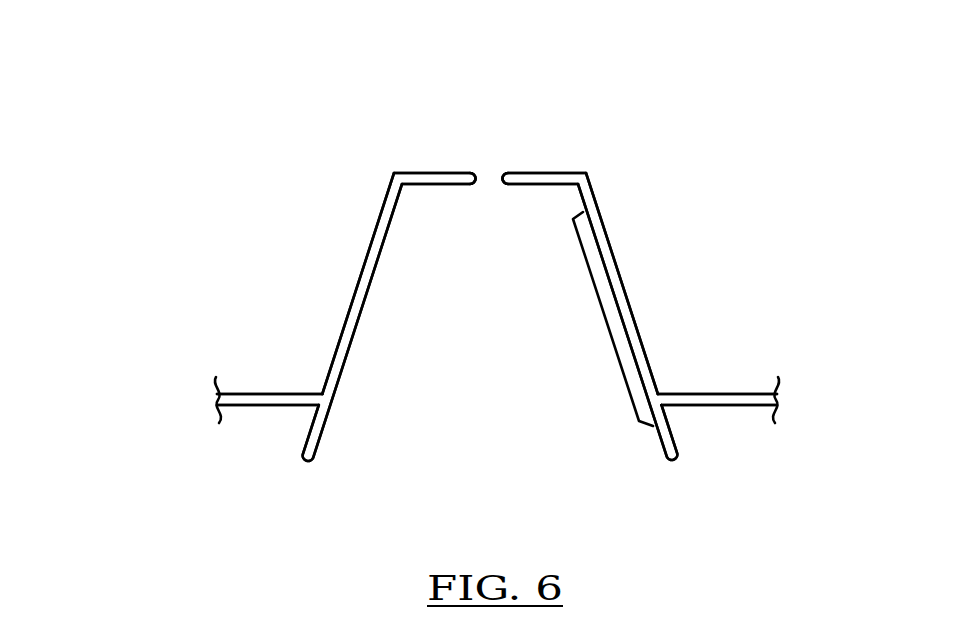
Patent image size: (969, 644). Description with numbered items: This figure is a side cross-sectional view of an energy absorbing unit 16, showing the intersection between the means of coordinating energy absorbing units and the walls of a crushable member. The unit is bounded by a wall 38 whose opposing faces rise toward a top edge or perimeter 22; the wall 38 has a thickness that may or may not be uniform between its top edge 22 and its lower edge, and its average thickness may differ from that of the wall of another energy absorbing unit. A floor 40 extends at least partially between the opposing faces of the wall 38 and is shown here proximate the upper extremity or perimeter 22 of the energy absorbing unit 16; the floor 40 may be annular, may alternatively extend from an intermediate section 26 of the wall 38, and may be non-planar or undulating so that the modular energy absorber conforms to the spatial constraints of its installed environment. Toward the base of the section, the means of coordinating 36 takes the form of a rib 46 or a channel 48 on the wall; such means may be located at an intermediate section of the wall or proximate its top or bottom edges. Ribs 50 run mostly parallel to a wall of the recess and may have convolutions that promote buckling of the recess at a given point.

The energy absorbing unit 16 is at (516, 148).
The top edge 22 is at (390, 172).
The intermediate section 26 is at (370, 292).
The means of coordinating 36 is at (735, 408).
The wall 38 is at (345, 306).
The floor 40 is at (540, 168).
The rib 46 is at (270, 376).
The channel 48 is at (707, 387).
The ribs 50 is at (608, 342).